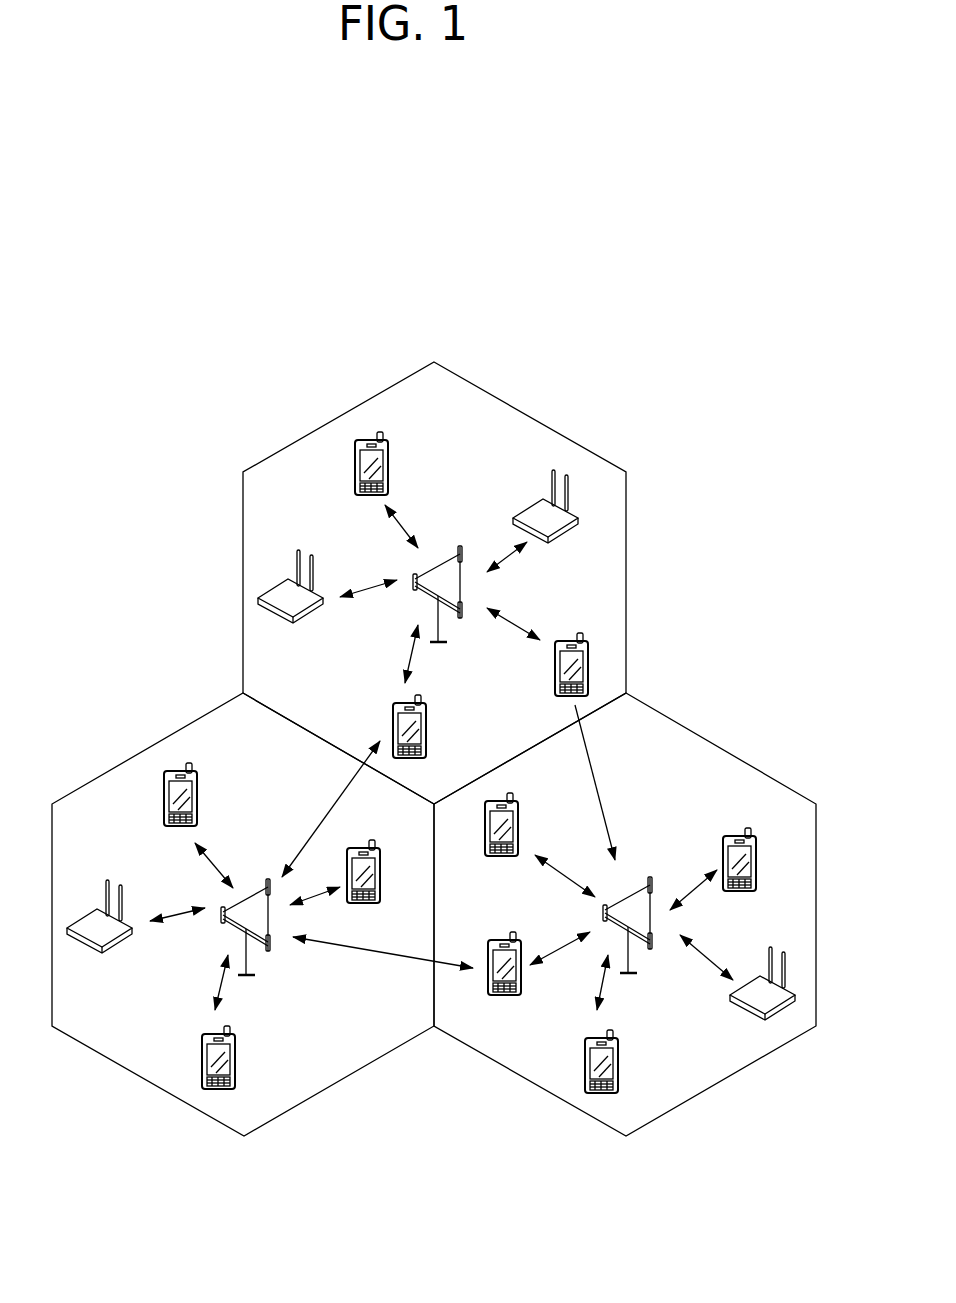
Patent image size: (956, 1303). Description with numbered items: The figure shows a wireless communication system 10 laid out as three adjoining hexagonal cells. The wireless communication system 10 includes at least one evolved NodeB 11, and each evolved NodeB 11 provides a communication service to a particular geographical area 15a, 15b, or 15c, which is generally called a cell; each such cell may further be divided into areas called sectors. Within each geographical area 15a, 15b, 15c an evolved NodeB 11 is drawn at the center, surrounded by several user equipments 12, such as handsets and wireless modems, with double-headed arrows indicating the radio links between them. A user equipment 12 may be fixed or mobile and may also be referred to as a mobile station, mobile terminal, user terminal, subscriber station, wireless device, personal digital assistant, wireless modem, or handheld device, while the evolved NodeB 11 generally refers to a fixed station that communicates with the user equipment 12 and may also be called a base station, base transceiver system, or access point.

The wireless communication system 10 is at (707, 481).
The evolved NodeB 11 is at (452, 565).
The user equipment 12 is at (388, 463).
The geographical area 15a is at (626, 572).
The geographical area 15b is at (748, 763).
The geographical area 15c is at (125, 762).